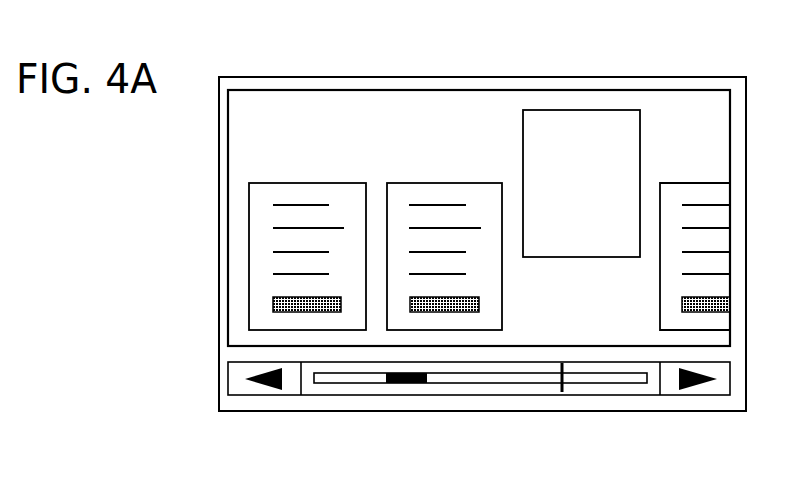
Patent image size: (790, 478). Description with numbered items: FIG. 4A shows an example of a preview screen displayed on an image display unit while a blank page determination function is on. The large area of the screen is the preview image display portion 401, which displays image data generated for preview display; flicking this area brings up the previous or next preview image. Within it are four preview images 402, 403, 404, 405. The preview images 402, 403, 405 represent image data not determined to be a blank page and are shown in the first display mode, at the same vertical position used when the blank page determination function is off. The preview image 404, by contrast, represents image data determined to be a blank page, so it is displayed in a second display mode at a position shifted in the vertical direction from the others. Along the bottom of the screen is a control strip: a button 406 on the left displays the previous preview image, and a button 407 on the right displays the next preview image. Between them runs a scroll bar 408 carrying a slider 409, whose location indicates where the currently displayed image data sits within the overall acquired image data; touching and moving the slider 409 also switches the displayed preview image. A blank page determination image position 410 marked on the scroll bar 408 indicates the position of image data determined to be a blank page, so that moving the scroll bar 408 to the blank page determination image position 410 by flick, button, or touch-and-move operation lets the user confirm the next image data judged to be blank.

The preview image display portion 401 is at (333, 90).
The preview image 402 is at (310, 183).
The preview image 403 is at (443, 183).
The preview image 404 is at (597, 110).
The preview image 405 is at (680, 183).
The button 406 is at (262, 395).
The button 407 is at (692, 395).
The scroll bar 408 is at (342, 383).
The slider 409 is at (412, 383).
The blank page determination image position 410 is at (562, 392).